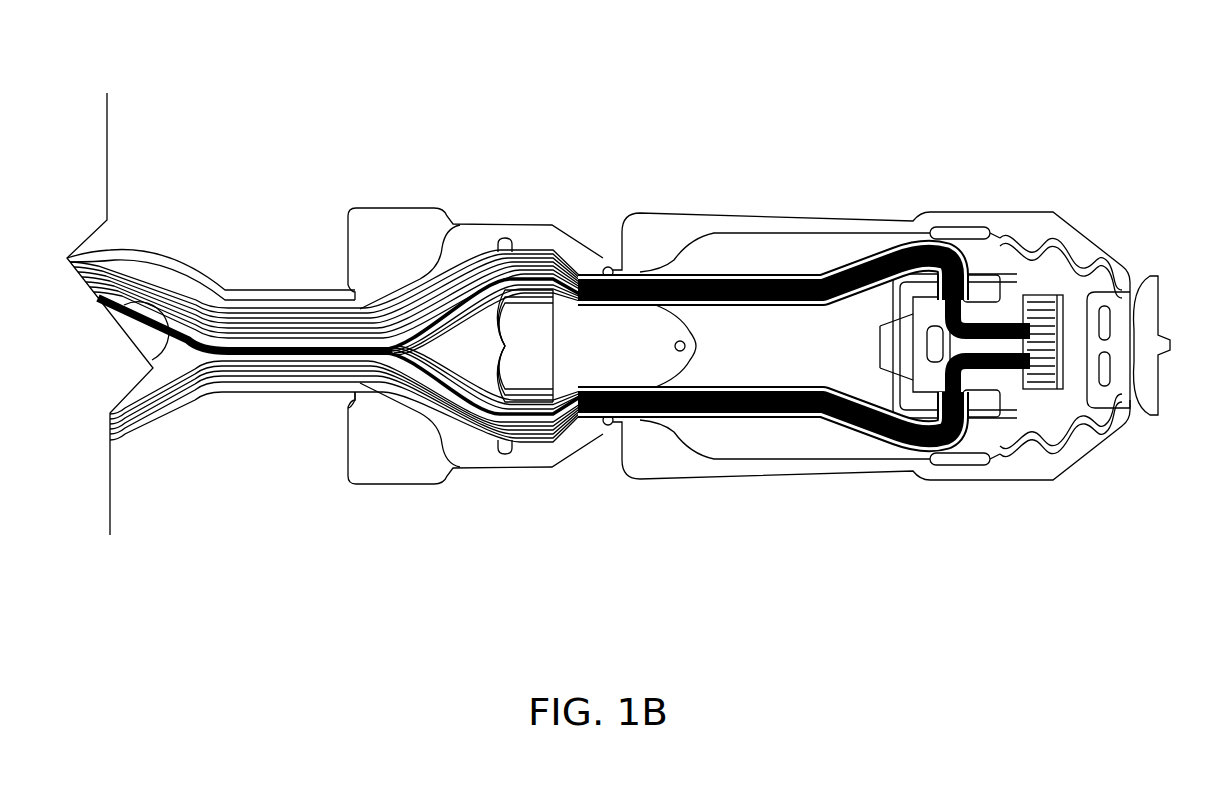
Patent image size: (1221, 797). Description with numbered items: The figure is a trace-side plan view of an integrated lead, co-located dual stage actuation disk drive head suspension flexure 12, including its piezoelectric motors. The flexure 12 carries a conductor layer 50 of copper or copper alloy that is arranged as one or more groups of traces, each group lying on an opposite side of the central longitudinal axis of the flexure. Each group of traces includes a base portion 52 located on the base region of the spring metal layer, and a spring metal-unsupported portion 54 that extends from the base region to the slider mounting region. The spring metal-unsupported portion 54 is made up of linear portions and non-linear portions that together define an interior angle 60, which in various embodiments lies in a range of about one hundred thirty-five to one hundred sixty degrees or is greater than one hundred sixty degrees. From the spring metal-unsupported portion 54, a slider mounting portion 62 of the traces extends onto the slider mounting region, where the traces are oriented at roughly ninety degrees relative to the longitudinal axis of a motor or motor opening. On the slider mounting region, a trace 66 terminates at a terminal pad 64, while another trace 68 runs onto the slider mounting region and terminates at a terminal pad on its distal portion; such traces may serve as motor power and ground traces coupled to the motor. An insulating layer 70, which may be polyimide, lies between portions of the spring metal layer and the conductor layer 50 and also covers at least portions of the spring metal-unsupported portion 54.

The flexure 12 is at (356, 152).
The conductor layer 50 is at (285, 305).
The base portion 52 is at (393, 387).
The spring metal-unsupported portion 54 is at (777, 417).
The interior angle 60 is at (823, 273).
The slider mounting portion 62 is at (953, 273).
The terminal pad 64 is at (1050, 373).
The trace 66 is at (873, 307).
The trace 68 is at (1020, 312).
The insulating layer 70 is at (388, 226).